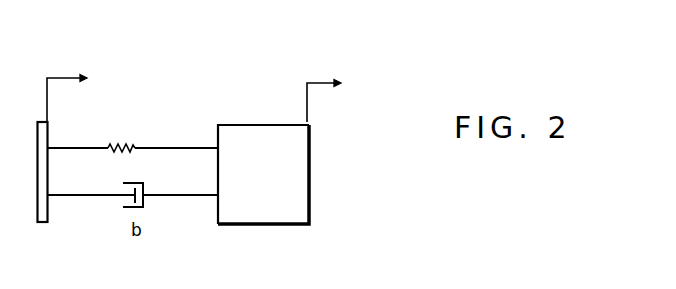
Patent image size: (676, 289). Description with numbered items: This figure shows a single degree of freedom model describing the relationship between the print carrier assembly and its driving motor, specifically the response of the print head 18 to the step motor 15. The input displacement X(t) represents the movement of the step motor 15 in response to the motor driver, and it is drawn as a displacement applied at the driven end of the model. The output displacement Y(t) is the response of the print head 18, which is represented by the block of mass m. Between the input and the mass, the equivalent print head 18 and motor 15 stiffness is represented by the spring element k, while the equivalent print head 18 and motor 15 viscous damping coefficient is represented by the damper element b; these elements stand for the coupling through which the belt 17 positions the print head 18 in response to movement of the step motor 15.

The step motor 15 is at (43, 222).
The belt 17 is at (131, 143).
The print head 18 is at (310, 193).